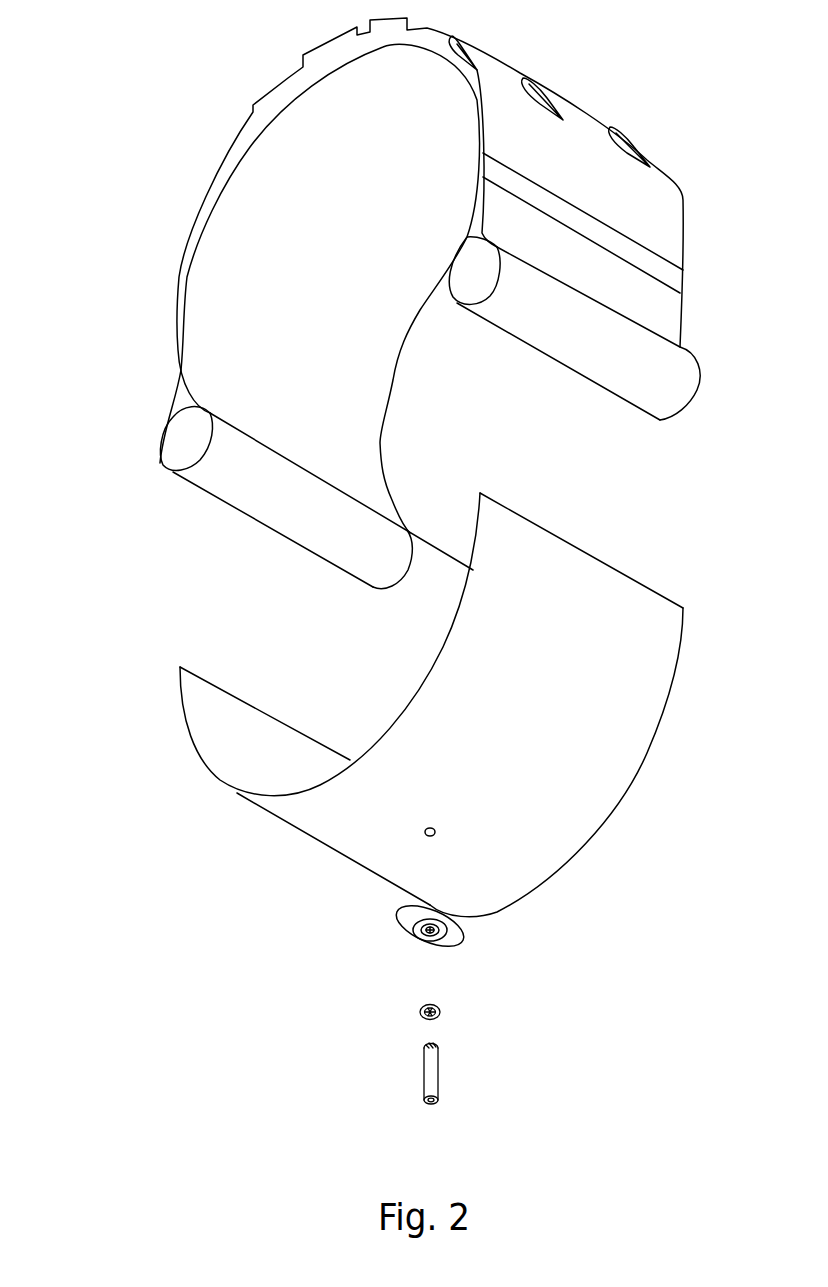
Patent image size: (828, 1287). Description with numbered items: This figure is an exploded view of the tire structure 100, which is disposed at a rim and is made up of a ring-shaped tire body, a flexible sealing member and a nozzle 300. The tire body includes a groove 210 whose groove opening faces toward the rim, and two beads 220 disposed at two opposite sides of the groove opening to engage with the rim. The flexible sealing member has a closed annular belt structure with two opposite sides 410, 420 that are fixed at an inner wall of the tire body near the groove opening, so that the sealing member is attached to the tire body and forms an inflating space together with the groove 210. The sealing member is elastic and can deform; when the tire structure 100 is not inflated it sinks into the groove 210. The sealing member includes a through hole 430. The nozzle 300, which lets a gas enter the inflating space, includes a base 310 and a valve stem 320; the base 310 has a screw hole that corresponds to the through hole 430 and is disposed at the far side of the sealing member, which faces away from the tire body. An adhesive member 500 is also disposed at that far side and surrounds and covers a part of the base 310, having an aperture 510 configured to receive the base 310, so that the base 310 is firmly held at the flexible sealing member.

The tire structure 100 is at (187, 30).
The groove 210 is at (330, 300).
The beads 220 is at (183, 438).
The nozzle 300 is at (241, 1022).
The base 310 is at (420, 1013).
The valve stem 320 is at (427, 1067).
The side 410 is at (218, 712).
The side 420 is at (405, 532).
The through hole 430 is at (427, 837).
The adhesive member 500 is at (483, 970).
The aperture 510 is at (430, 940).